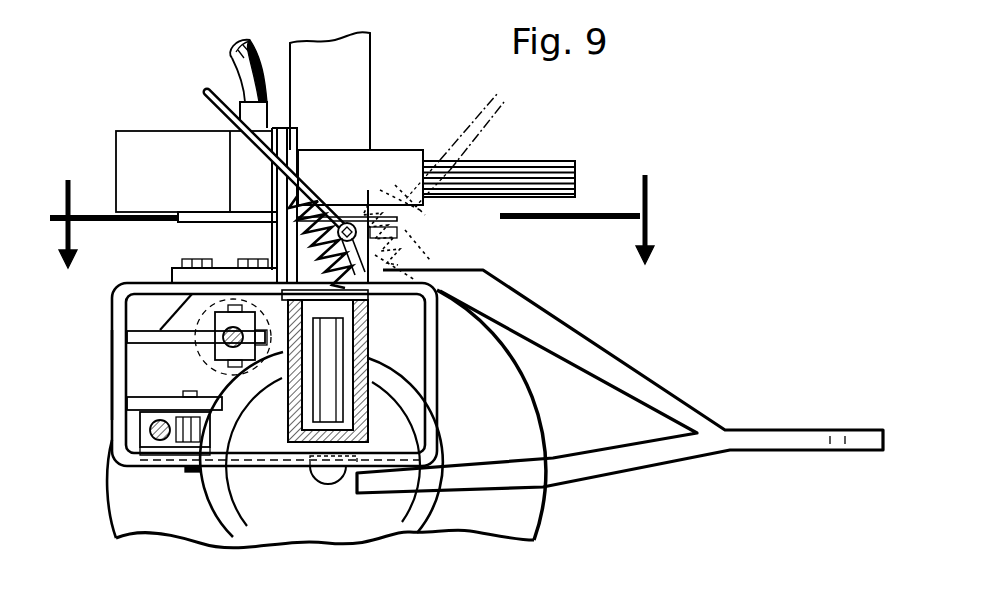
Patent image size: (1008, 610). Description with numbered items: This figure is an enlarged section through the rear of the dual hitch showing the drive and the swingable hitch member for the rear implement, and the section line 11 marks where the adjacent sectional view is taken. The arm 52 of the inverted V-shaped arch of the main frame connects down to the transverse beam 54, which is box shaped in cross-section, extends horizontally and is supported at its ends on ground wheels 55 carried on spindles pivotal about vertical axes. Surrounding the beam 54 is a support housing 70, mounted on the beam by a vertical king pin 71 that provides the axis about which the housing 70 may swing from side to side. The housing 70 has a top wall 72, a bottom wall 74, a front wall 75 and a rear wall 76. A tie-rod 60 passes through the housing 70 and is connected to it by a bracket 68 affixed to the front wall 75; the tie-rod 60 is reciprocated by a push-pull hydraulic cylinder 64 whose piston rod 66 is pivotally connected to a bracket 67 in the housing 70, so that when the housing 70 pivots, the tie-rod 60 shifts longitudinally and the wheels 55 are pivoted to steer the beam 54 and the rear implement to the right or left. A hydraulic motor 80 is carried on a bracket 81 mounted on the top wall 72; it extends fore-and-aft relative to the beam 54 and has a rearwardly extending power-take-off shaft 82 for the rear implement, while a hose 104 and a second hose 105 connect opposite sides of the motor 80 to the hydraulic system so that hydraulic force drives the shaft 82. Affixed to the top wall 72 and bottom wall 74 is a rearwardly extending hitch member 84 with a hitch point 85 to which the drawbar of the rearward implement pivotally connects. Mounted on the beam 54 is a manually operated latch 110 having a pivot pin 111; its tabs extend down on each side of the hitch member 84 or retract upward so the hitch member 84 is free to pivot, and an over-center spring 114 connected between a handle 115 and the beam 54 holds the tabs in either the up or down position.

The section line 11- 11 is at (358, 217).
The arm 52 is at (340, 46).
The hose 104 is at (232, 68).
The second hose 105 is at (252, 44).
The hydraulic motor 80 is at (163, 137).
The bracket 81 is at (278, 221).
The push-pull hydraulic cylinder 64 is at (225, 268).
The manually operated latch 110 is at (410, 103).
The handle 115 is at (418, 160).
The pivot pin 111 is at (337, 208).
The over-center spring 114 is at (300, 247).
The power-take-off shaft 82 is at (520, 162).
The top wall 72 is at (138, 284).
The bottom wall 74 is at (257, 464).
The bracket 67 is at (139, 334).
The piston rod 66 is at (210, 360).
The bracket 68 is at (148, 405).
The tie-rod 60 is at (138, 433).
The front wall 75 is at (118, 368).
The support housing 70 is at (93, 470).
The transverse beam 54 is at (372, 338).
The king pin 71 is at (332, 406).
The rear wall 76 is at (424, 382).
The ground wheel 55 is at (540, 497).
The hitch member 84 is at (630, 373).
The hitch point 85 is at (830, 432).